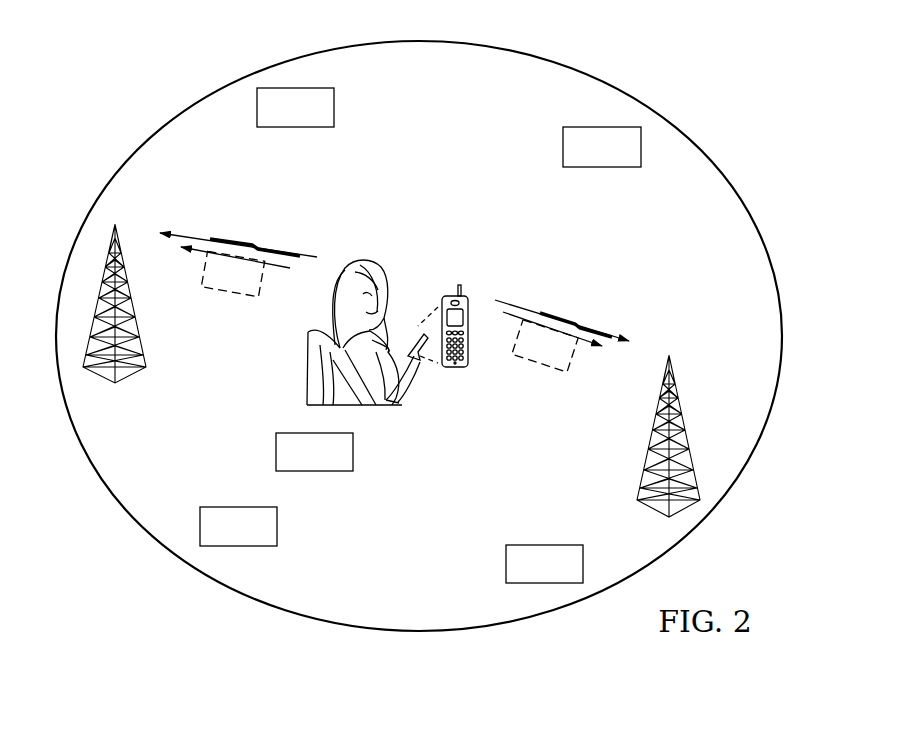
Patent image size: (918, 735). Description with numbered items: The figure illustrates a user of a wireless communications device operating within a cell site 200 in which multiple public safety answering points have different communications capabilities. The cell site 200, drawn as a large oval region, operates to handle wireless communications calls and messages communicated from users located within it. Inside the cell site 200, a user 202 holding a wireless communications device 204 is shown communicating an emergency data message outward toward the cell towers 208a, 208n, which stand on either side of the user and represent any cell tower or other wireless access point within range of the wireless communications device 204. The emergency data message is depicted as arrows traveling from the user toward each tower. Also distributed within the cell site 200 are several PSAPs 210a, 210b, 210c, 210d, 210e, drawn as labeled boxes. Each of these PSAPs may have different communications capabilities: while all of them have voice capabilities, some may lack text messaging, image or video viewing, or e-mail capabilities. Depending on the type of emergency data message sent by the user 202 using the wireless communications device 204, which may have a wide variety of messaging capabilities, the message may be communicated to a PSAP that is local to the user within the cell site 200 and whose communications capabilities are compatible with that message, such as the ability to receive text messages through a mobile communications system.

The cell site 200 is at (655, 101).
The user 202 is at (363, 262).
The wireless communications device 204 is at (455, 293).
The cell tower 208a is at (140, 371).
The cell tower 208n is at (642, 465).
The PSAP 210a is at (277, 527).
The PSAP 210b is at (276, 450).
The PSAP 210c is at (334, 107).
The PSAP 210d is at (563, 146).
The PSAP 210e is at (506, 562).